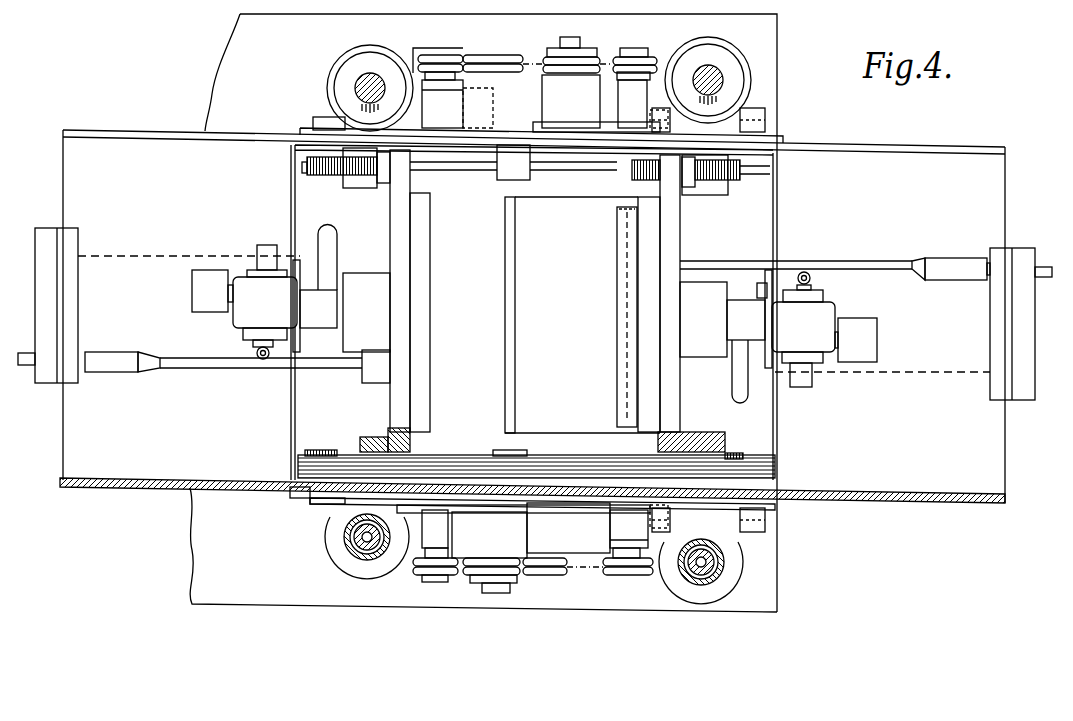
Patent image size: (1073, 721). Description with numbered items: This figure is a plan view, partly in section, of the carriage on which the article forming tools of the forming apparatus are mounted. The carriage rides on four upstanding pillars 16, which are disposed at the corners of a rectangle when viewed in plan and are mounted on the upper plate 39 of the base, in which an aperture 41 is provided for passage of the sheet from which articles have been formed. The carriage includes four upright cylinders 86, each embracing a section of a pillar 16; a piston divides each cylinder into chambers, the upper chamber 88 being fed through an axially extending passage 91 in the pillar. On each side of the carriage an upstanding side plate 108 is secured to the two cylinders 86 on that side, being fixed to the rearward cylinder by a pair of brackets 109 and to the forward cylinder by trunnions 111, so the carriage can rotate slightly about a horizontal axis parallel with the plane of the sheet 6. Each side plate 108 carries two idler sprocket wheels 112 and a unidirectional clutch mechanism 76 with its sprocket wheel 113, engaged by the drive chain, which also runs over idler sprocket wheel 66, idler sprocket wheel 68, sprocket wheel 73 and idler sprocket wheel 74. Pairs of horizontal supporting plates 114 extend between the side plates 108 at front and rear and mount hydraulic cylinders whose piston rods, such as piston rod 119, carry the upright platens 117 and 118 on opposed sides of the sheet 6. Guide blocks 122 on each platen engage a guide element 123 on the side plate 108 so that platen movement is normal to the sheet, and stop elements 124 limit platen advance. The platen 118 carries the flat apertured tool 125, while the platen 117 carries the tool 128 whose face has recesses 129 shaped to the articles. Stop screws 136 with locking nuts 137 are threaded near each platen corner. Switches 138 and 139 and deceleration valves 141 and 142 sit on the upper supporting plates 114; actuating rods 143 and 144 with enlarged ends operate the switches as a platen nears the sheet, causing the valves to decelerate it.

The sheet 6 is at (513, 310).
The upstanding pillar 16 is at (360, 85).
The upper plate 39 is at (260, 539).
The aperture 41 is at (582, 572).
The idler sprocket wheel 66 is at (533, 572).
The idler sprocket wheel 68 is at (645, 573).
The sprocket wheel 73 is at (492, 55).
The idler sprocket wheel 74 is at (431, 55).
The unidirectional clutch mechanism 76 is at (553, 106).
The upright cylinder 86 is at (750, 72).
The upper chamber 88 is at (357, 555).
The axially extending passage 91 is at (347, 547).
The side plate 108 is at (902, 150).
The bracket 109 is at (330, 502).
The trunnion 111 is at (758, 110).
The idler sprocket wheel 112 is at (637, 50).
The sprocket wheel 113 is at (580, 50).
The horizontal supporting plate 114 is at (234, 197).
The platen 117 is at (677, 227).
The platen 118 is at (392, 228).
The piston rod 119 is at (745, 287).
The guide block 122 is at (700, 452).
The guide element 123 is at (557, 465).
The stop element 124 is at (506, 175).
The tool 125 is at (428, 222).
The tool 128 is at (618, 213).
The recess 129 is at (617, 272).
The stop screw 136 is at (770, 171).
The locking nut 137 is at (695, 192).
The switch 138 is at (820, 331).
The switch 139 is at (280, 307).
The deceleration valve 141 is at (765, 331).
The deceleration valve 142 is at (334, 320).
The actuating rod 143 is at (853, 266).
The actuating rod 144 is at (197, 361).